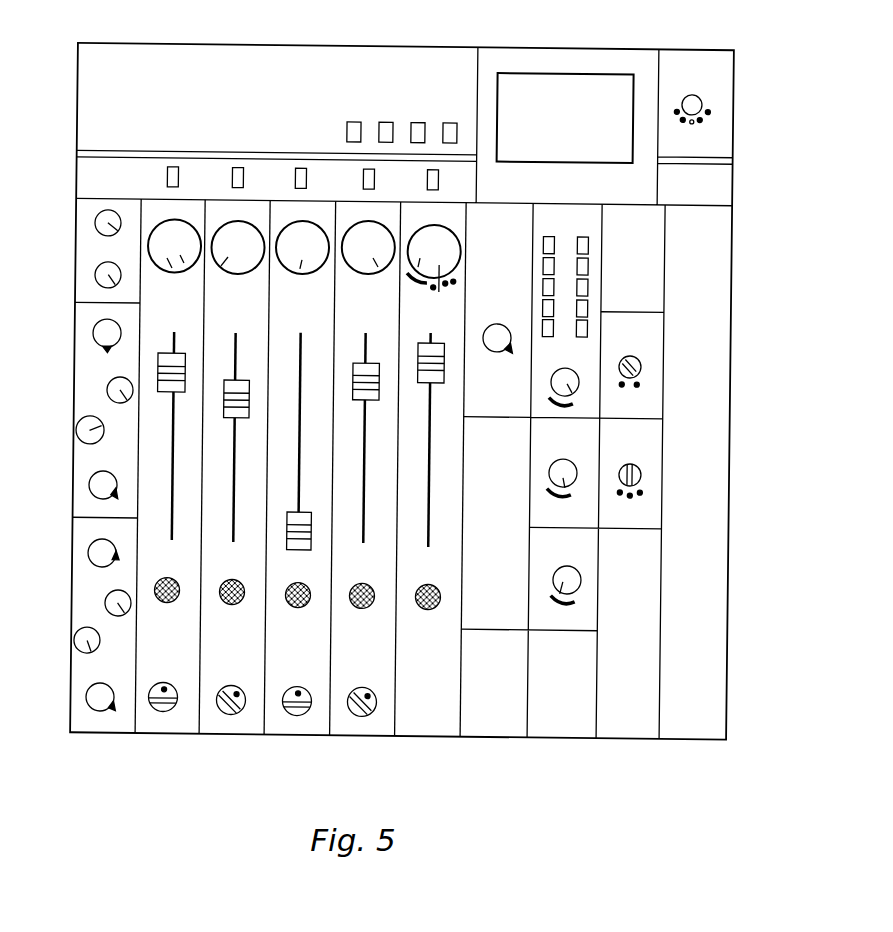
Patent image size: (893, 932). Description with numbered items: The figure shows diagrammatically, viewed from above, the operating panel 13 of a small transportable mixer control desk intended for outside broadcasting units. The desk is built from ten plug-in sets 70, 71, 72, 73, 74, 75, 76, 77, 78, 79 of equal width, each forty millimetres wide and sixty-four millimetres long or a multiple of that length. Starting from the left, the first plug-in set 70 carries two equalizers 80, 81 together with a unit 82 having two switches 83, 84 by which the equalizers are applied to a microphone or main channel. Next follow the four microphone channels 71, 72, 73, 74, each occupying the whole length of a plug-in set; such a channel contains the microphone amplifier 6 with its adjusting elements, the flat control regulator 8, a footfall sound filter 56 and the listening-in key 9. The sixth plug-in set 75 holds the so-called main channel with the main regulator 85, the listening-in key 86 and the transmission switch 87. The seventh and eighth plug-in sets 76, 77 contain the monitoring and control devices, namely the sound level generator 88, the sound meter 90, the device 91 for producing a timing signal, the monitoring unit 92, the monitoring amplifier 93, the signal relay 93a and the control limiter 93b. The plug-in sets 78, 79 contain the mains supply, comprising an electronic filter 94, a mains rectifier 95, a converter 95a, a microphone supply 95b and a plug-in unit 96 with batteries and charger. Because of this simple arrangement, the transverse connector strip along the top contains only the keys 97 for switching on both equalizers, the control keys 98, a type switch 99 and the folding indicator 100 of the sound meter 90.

The control panel 13 is at (252, 52).
The folding indicator 100 is at (618, 80).
The type switch 99 is at (716, 100).
The control keys 98 is at (446, 122).
The keys 97 is at (167, 170).
The first plug-in set 70 is at (86, 484).
The unit 82 is at (88, 248).
The switch 84 is at (97, 224).
The switch 83 is at (96, 272).
The equalizer 81 is at (88, 457).
The equalizer 80 is at (87, 597).
The microphone channel 71 is at (174, 488).
The microphone amplifier 6 is at (173, 275).
The flat regulator 8 is at (176, 396).
The listening-in key 9 is at (170, 605).
The footfall sound filter 56 is at (173, 686).
The microphone channel 72 is at (232, 737).
The microphone channel 73 is at (298, 738).
The microphone channel 74 is at (364, 738).
The main channel plug-in set 75 is at (433, 494).
The transmission switch 87 is at (435, 297).
The main regulator 85 is at (434, 385).
The listening-in key 86 is at (436, 608).
The plug-in set 76 is at (563, 478).
The sound level generator 88 is at (501, 222).
The sound meter 90 is at (508, 530).
The device for producing a timing signal 91 is at (510, 683).
The plug-in set 77 is at (595, 486).
The monitoring unit 92 is at (569, 228).
The monitoring amplifier 93 is at (578, 505).
The control limiter 93b is at (586, 562).
The signal relay 93a is at (572, 714).
The plug-in set 78 is at (661, 504).
The electronic filter 94 is at (651, 241).
The mains rectifier 95 is at (647, 390).
The converter 95a is at (645, 506).
The microphone supply 95b is at (639, 712).
The plug-in set 79 is at (701, 764).
The plug-in unit with batteries and charger 96 is at (702, 720).